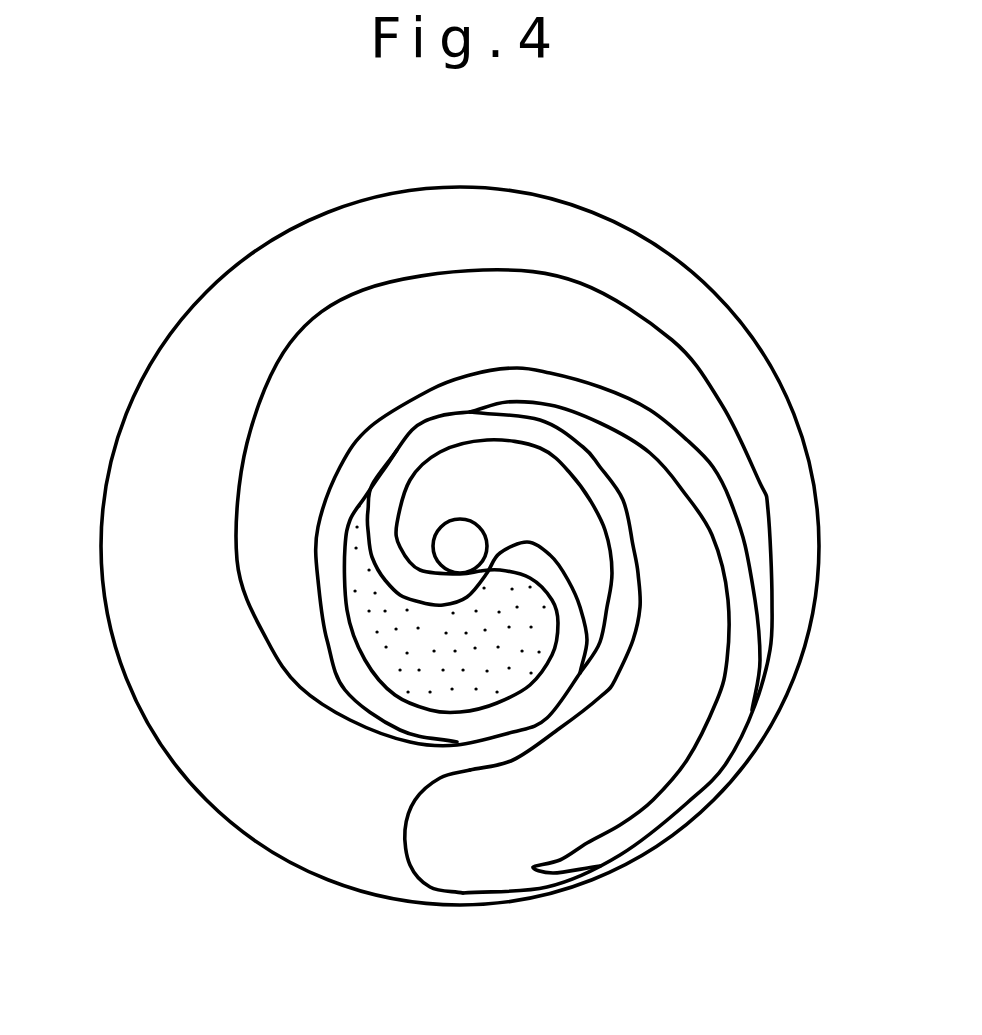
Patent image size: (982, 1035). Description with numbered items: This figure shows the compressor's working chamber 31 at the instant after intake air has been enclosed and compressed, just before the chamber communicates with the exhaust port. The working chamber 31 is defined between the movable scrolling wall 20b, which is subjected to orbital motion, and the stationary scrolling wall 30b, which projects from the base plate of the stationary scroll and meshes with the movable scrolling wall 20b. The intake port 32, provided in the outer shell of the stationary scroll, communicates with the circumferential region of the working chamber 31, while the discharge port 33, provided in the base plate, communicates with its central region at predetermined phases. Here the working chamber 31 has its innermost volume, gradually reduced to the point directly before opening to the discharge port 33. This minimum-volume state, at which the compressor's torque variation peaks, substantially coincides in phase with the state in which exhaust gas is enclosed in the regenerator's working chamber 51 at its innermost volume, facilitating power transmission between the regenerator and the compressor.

The working chamber 51 is at (458, 480).
The movable scrolling wall 20b is at (345, 492).
The discharge port 33 is at (464, 519).
The stationary scrolling wall 30b is at (625, 607).
The working chamber 31 is at (417, 672).
The intake port 32 is at (485, 853).